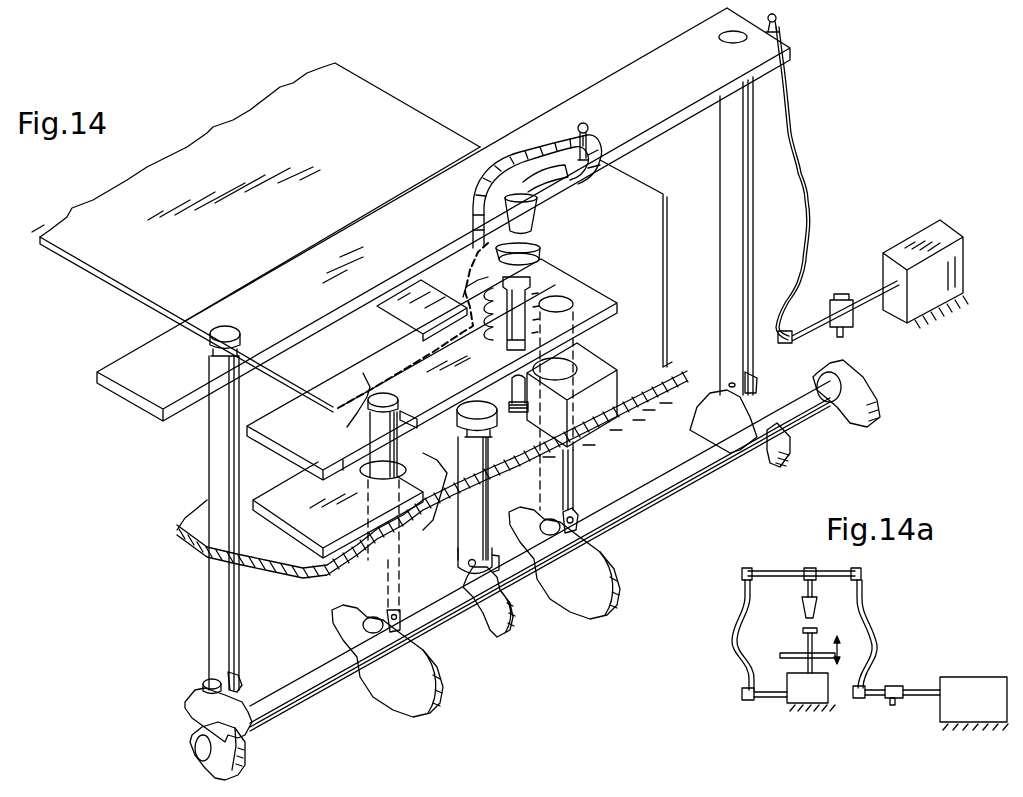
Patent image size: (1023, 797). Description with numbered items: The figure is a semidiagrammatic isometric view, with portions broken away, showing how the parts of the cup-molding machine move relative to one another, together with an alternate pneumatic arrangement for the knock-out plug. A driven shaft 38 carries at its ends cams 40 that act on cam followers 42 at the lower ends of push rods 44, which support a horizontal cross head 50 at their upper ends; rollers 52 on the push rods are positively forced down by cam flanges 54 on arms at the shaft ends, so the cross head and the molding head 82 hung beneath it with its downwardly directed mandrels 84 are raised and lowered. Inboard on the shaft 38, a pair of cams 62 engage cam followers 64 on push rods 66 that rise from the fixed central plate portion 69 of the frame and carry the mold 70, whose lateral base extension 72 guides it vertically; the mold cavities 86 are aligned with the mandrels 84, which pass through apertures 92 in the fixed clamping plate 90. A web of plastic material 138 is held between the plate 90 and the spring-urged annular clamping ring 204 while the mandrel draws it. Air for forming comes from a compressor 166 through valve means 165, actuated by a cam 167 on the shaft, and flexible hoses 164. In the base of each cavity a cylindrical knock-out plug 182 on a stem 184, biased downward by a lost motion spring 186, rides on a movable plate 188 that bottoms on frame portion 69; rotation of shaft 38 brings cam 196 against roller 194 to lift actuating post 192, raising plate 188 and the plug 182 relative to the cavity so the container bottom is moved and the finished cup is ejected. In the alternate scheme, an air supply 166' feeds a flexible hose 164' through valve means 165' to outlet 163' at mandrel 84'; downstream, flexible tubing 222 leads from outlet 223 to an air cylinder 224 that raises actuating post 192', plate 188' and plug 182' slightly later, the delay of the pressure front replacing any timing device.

In FIG. 14, the shaft 38 is at (657, 497).
In FIG. 14, the cams 40 is at (200, 698).
In FIG. 14, the cam followers 42 is at (242, 678).
In FIG. 14, the push rods 44 is at (217, 577).
In FIG. 14, the cross head 50 is at (140, 352).
In FIG. 14, the rollers 52 is at (206, 681).
In FIG. 14, the cam flanges 54 is at (245, 752).
In FIG. 14, the cams 62 is at (408, 702).
In FIG. 14, the cam followers 64 is at (396, 625).
In FIG. 14, the push rods 66 is at (377, 577).
In FIG. 14, the central plate portion 69 is at (292, 560).
In FIG. 14, the mold 70 is at (560, 278).
In FIG. 14, the lateral base extension 72 is at (607, 313).
In FIG. 14, the molding head 82 is at (600, 173).
In FIG. 14, the mandrels 84 is at (540, 214).
In FIG. 14, the cavities 86 is at (524, 305).
In FIG. 14, the clamping plate 90 is at (413, 318).
In FIG. 14, the apertures 92 is at (535, 241).
In FIG. 14, the web of plastic material 138 is at (75, 246).
In FIG. 14, the flexible hoses 164 is at (837, 185).
In FIG. 14, the valve means 165 is at (852, 297).
In FIG. 14, the compressor 166 is at (939, 265).
In FIG. 14, the cam 167 is at (862, 388).
In FIG. 14, the knock-out plug 182 is at (505, 321).
In FIG. 14, the stem 184 is at (527, 386).
In FIG. 14, the lost motion spring 186 is at (529, 403).
In FIG. 14, the movable plate 188 is at (434, 447).
In FIG. 14, the actuating post 192 is at (496, 480).
In FIG. 14, the cam follower 194 is at (463, 556).
In FIG. 14, the cam 196 is at (488, 635).
In FIG. 14, the clamping ring 204 is at (465, 289).
In FIG. 14A, the outlet 163' is at (801, 582).
In FIG. 14A, the mandrel 84' is at (788, 607).
In FIG. 14A, the knock-out and forming plug 182' is at (797, 646).
In FIG. 14A, the movable plate 188' is at (739, 636).
In FIG. 14A, the actuating post 192' is at (745, 678).
In FIG. 14A, the flexible tubing 222 is at (780, 654).
In FIG. 14A, the outlet 223 is at (783, 700).
In FIG. 14A, the air cylinder 224 is at (789, 703).
In FIG. 14A, the flexible hose 164' is at (896, 639).
In FIG. 14A, the valve means 165' is at (914, 679).
In FIG. 14A, the air supply 166' is at (974, 690).